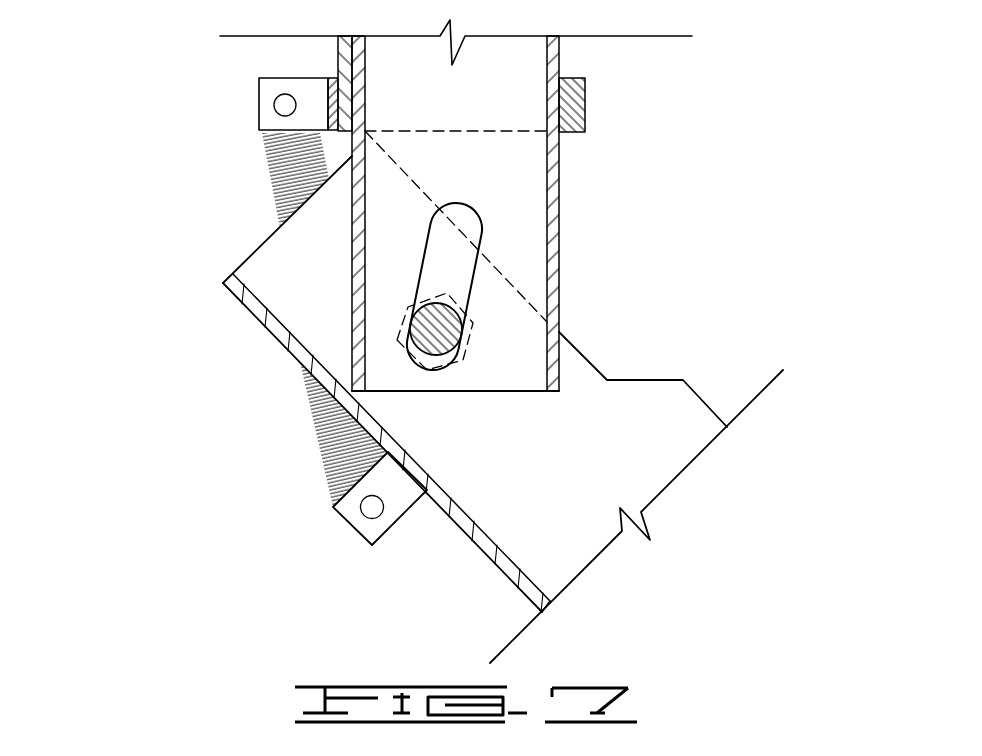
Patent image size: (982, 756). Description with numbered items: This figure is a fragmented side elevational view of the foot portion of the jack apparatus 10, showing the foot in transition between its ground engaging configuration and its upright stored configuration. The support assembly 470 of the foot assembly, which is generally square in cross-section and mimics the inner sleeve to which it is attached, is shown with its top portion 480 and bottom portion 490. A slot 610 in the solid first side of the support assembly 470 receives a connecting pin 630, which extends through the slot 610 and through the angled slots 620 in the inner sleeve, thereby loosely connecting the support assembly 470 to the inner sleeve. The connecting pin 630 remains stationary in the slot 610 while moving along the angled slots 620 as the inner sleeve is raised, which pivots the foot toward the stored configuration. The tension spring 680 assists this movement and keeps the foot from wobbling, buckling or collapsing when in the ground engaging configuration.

The jack apparatus 10 is at (178, 57).
The top portion 480 is at (620, 120).
The tension spring 680 is at (272, 180).
The support assembly 470 is at (255, 371).
The angled slots 620 is at (467, 227).
The connecting pin 630 is at (455, 310).
The slot 610 is at (467, 356).
The bottom portion 490 is at (735, 357).